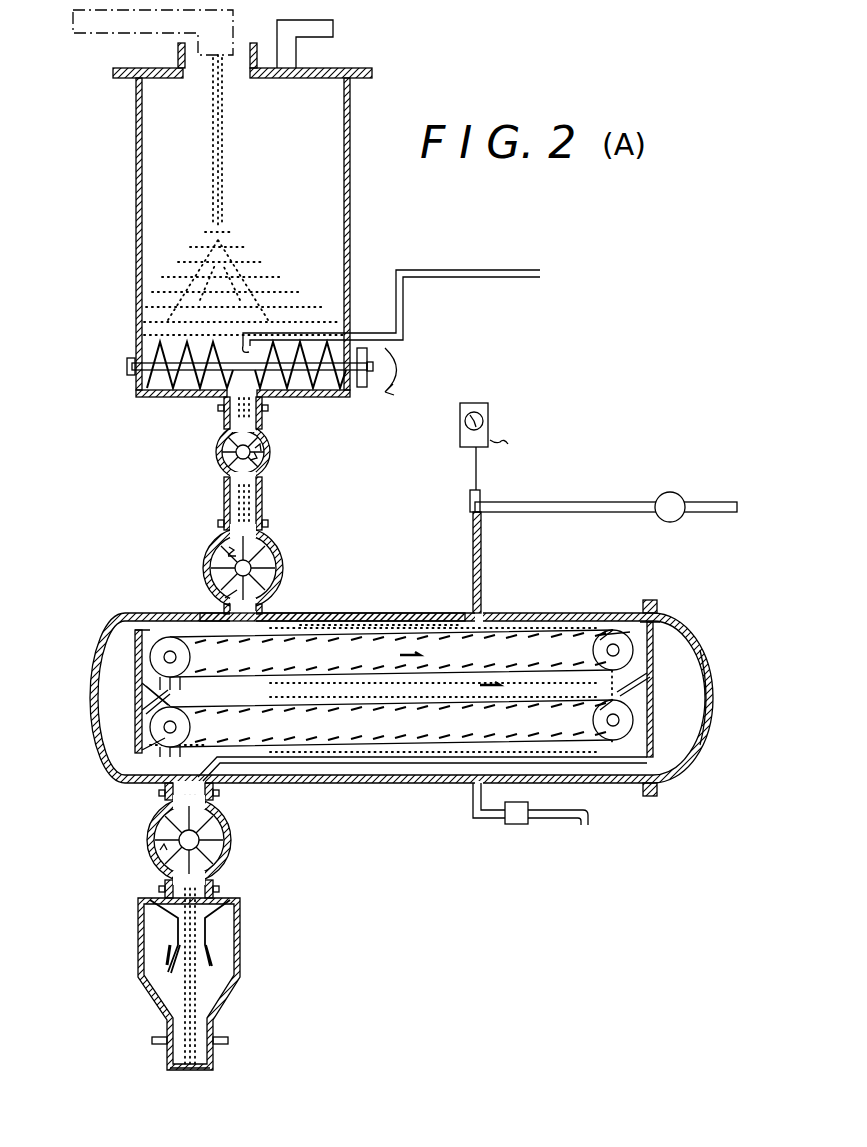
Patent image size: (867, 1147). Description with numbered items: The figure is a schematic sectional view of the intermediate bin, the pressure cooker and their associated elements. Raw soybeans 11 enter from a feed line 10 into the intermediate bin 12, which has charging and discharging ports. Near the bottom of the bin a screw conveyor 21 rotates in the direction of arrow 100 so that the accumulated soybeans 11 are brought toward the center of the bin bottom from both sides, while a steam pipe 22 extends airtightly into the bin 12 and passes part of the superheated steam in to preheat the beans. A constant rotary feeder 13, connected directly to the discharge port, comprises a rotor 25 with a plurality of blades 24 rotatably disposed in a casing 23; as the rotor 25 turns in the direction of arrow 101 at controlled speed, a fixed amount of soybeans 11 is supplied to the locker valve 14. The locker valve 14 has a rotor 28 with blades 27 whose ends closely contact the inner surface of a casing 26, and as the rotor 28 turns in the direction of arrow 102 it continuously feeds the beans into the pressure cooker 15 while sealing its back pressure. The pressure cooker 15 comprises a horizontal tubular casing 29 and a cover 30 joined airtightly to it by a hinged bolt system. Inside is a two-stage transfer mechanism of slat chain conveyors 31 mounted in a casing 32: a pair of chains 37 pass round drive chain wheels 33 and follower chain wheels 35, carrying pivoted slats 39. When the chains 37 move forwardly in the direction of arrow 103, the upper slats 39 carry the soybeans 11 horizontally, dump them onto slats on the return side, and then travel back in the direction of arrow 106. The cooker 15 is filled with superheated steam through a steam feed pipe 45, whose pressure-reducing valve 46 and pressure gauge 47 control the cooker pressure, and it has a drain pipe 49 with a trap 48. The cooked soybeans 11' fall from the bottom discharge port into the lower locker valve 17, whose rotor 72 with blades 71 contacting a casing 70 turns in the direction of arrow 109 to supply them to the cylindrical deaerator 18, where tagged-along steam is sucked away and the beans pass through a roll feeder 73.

The feed pipe 10 is at (100, 35).
The raw soybeans 11 is at (378, 560).
The intermediate bin 12 is at (136, 152).
The constant rotary feeder 13 is at (216, 450).
The locker valve 14 is at (272, 552).
The pressure cooker 15 is at (456, 612).
The lower locker valve 17 is at (155, 825).
The cylindrical deaerator 18 is at (140, 962).
The screw conveyor 21 is at (290, 385).
The steam pipe 22 is at (462, 268).
The casing 23 is at (225, 465).
The blades 24 is at (266, 490).
The rotor 25 is at (238, 462).
The casing 26 is at (276, 585).
The blades 27 is at (278, 552).
The rotor 28 is at (222, 586).
The horizontal tubular casing 29 is at (106, 618).
The cover 30 is at (704, 655).
The slat chain conveyors 31 is at (572, 630).
The casing 32 is at (372, 770).
The drive chain wheels 33 is at (635, 700).
The follower chain wheels 35 is at (152, 728).
The chains 37 is at (165, 614).
The slats 39 is at (232, 640).
The steam feed pipe 45 is at (590, 502).
The pressure-reducing valve 46 is at (665, 492).
The pressure gauge 47 is at (490, 415).
The trap 48 is at (516, 826).
The drain pipe 49 is at (478, 835).
The casing 70 is at (150, 845).
The blades 71 is at (227, 848).
The rotor 72 is at (215, 870).
The roll feeder 73 is at (220, 1058).
The arrow 100 is at (398, 348).
The arrow 101 is at (266, 460).
The arrow 102 is at (212, 555).
The arrow 103 is at (432, 614).
The arrow 106 is at (530, 665).
The arrow 109 is at (160, 858).
The cooked soybeans 11' is at (223, 887).